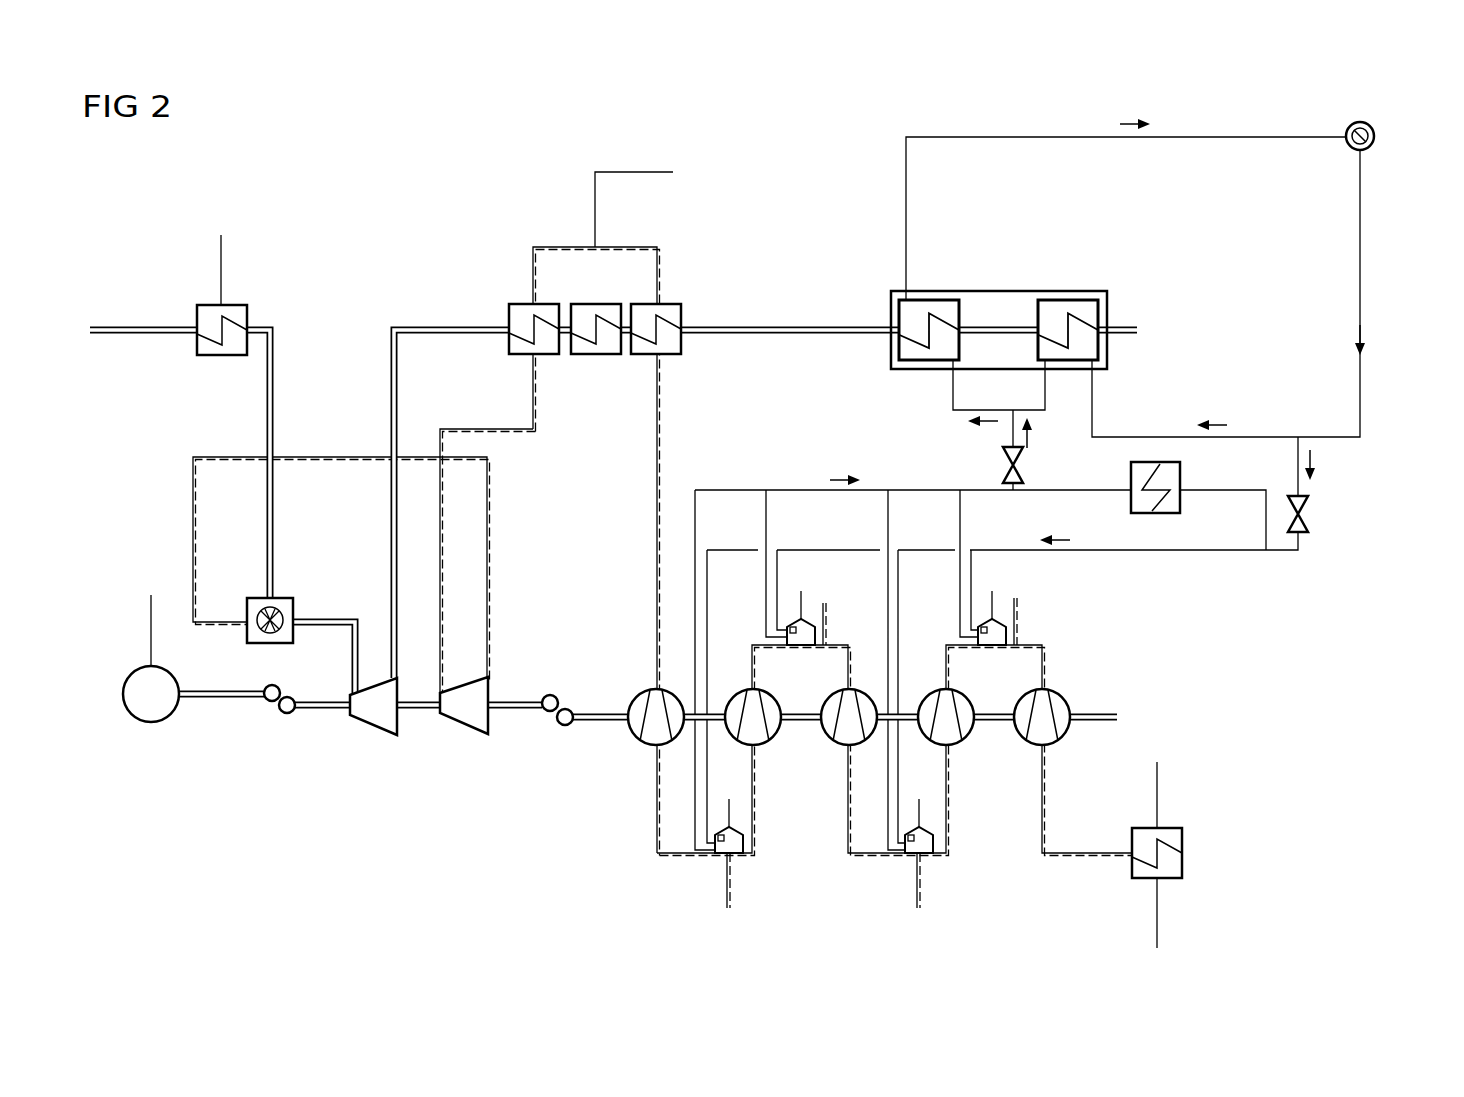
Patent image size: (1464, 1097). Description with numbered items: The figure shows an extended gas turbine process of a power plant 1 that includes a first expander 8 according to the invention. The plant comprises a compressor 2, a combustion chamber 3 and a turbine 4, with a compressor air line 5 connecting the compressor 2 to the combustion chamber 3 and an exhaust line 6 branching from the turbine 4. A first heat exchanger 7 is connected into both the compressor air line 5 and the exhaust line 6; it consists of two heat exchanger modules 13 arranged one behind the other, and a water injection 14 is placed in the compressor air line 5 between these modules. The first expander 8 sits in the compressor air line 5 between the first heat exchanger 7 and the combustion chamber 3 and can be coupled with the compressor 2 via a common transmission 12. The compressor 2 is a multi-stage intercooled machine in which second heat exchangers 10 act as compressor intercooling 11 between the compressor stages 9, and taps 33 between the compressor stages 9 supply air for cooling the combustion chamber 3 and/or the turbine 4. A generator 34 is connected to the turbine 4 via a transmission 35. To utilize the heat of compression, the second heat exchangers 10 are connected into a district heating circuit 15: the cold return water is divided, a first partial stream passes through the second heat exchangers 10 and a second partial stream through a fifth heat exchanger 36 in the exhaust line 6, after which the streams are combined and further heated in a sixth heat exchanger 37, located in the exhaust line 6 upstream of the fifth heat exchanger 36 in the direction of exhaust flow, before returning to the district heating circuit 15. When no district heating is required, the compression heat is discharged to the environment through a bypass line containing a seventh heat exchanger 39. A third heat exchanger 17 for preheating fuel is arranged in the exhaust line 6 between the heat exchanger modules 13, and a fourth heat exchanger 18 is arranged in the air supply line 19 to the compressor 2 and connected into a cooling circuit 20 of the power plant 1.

The power plant 1 is at (718, 132).
The compressor 2 is at (1060, 897).
The combustion chamber 3 is at (280, 597).
The turbine 4 is at (370, 736).
The compressor air line 5 is at (325, 455).
The exhaust line 6 is at (437, 325).
The first heat exchanger 7 is at (670, 300).
The first expander 8 is at (462, 735).
The compressor stages 9 is at (635, 746).
The second heat exchangers 10 is at (890, 680).
The compressor intercooling 11 is at (808, 627).
The common transmission 12 is at (553, 726).
The heat exchanger modules 13 is at (525, 300).
The water injection 14 is at (637, 170).
The district heating circuit 15 is at (1376, 136).
The third heat exchanger 17 is at (597, 358).
The fourth heat exchanger 18 is at (1183, 860).
The air supply line 19 is at (1090, 852).
The cooling circuit 20 is at (1160, 905).
The taps 33 is at (825, 605).
The generator 34 is at (151, 723).
The transmission 35 is at (272, 714).
The fifth heat exchanger 36 is at (1060, 300).
The sixth heat exchanger 37 is at (930, 300).
The seventh heat exchanger 39 is at (1182, 502).